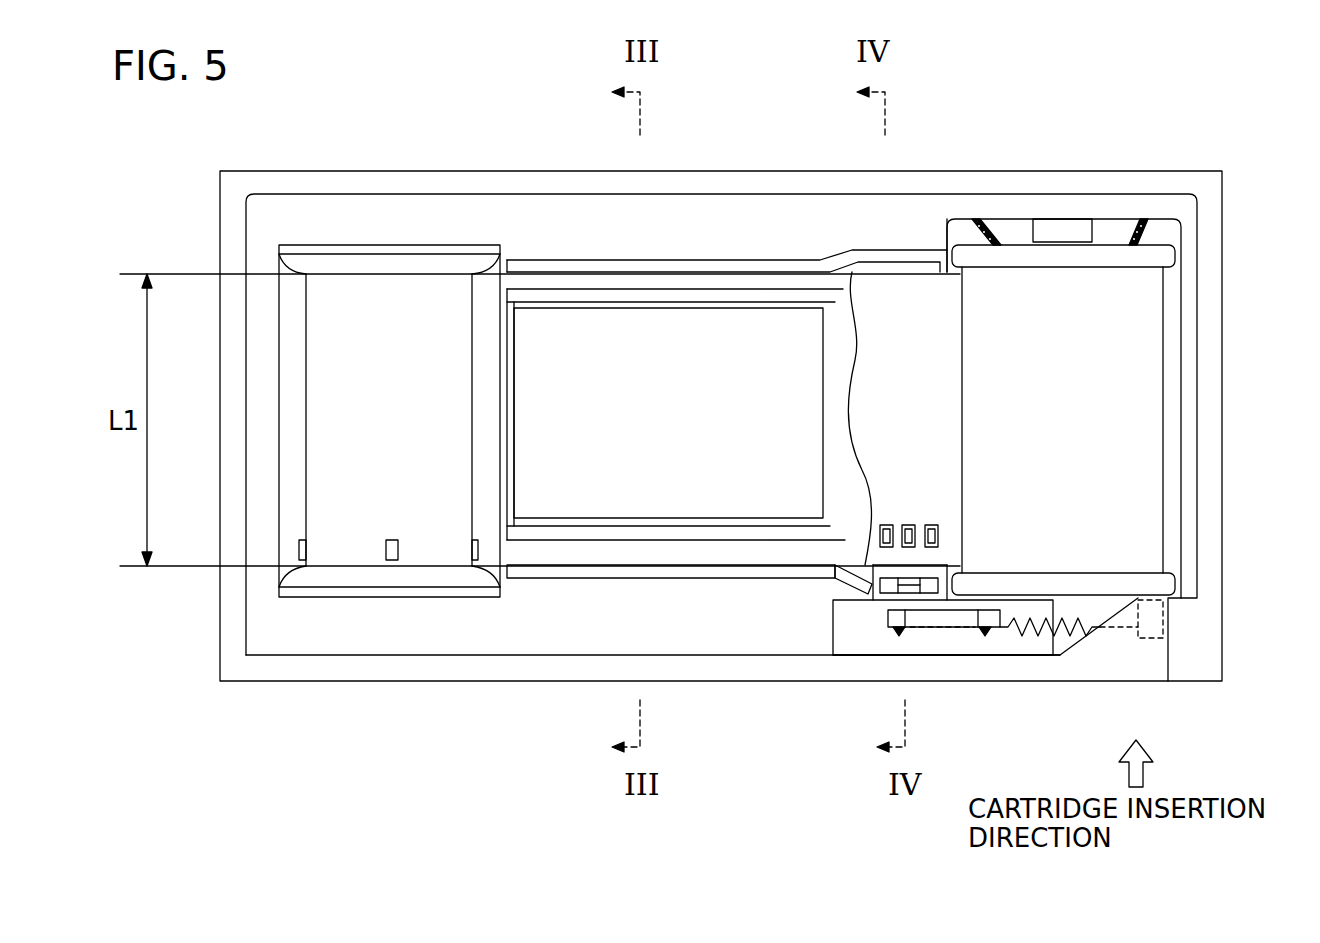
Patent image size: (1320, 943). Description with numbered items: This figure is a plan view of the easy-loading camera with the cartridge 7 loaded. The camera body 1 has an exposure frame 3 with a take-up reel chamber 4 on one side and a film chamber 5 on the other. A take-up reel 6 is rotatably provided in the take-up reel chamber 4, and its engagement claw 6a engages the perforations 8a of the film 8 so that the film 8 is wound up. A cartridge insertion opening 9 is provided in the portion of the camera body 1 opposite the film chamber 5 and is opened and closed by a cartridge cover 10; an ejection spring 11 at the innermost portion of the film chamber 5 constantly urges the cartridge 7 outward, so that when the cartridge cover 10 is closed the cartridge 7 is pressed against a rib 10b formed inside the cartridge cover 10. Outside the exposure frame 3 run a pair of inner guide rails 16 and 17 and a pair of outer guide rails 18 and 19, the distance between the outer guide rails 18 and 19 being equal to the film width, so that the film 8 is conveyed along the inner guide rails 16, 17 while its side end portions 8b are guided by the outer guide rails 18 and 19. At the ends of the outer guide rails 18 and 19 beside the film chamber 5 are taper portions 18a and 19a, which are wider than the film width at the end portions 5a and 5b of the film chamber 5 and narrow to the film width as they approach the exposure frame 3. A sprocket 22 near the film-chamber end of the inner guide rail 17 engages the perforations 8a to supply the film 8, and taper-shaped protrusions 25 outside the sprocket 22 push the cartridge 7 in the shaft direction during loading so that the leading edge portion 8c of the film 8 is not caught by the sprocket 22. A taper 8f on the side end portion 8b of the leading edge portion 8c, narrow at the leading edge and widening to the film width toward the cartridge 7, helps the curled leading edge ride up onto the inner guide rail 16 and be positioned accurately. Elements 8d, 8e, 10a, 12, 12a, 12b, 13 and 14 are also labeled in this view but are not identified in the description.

The camera body 1 is at (1215, 371).
The exposure frame 3 is at (695, 325).
The take-up reel chamber 4 is at (290, 483).
The film chamber 5 is at (1116, 228).
The end portion of film chamber 5a is at (958, 242).
The end portion of film chamber 5b is at (985, 636).
The take-up reel 6 is at (322, 346).
The engagement claw 6a is at (298, 546).
The cartridge 7 is at (1150, 486).
The film 8 is at (928, 372).
The perforations 8a is at (935, 530).
The side end portions of film 8b is at (925, 262).
The leading edge portion of film 8c is at (935, 331).
The guide portion 8d is at (838, 300).
The bent portion 8e is at (856, 410).
The taper of film 8f is at (855, 286).
The cartridge insertion opening 9 is at (843, 658).
The cartridge cover 10 is at (1150, 660).
The block body 10a is at (962, 658).
The rib 10b is at (1070, 612).
The ejection spring 11 is at (1165, 230).
The lower roller bracket 12 is at (975, 585).
The bracket end 12a is at (958, 578).
The bracket pin 12b is at (1000, 640).
The plate 13 is at (935, 640).
The spring 14 is at (1062, 638).
The inner guide rail 16 is at (537, 298).
The inner guide rail 17 is at (527, 535).
The outer guide rail 18 is at (665, 262).
The taper portion 18a is at (882, 256).
The outer guide rail 19 is at (568, 572).
The taper portion 19a is at (840, 588).
The sprocket 22 is at (908, 524).
The taper-shaped protrusions 25 is at (888, 584).